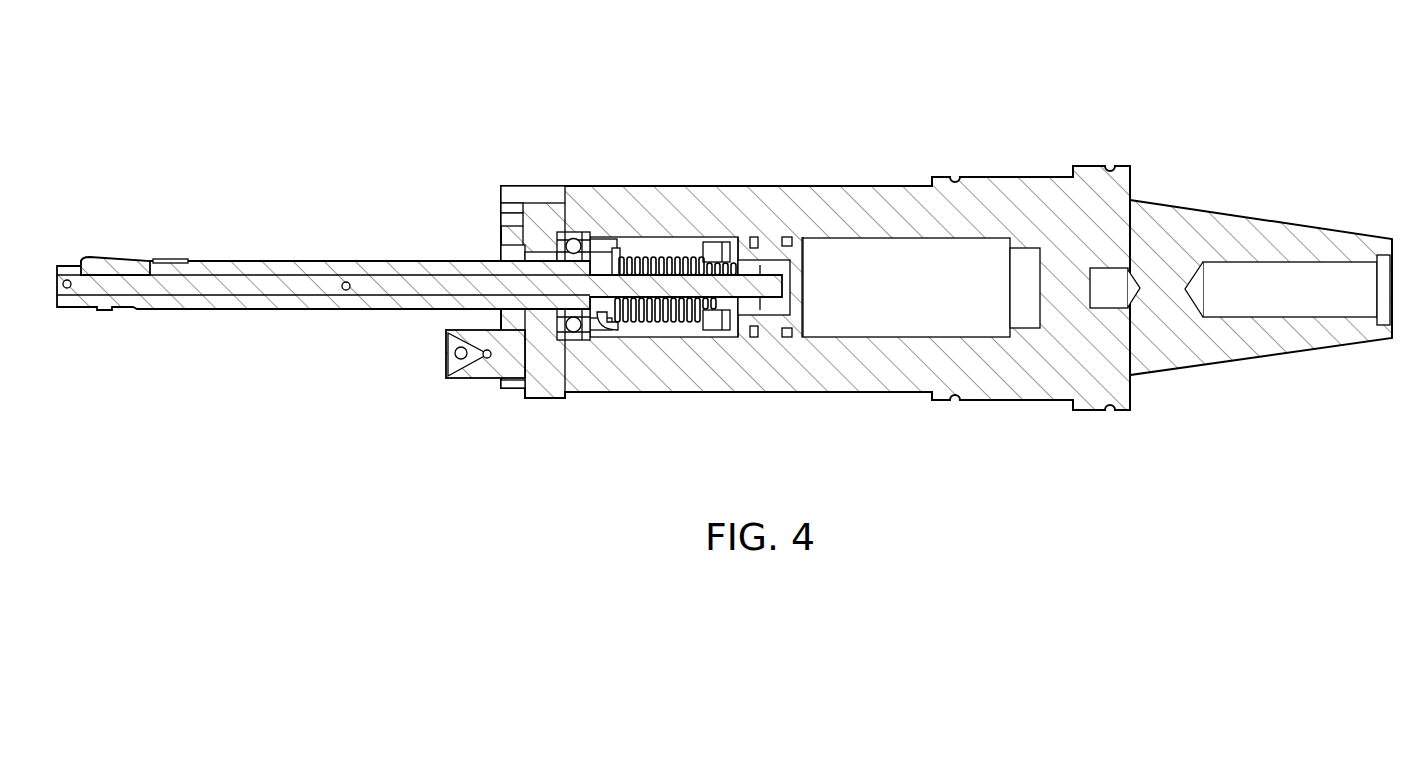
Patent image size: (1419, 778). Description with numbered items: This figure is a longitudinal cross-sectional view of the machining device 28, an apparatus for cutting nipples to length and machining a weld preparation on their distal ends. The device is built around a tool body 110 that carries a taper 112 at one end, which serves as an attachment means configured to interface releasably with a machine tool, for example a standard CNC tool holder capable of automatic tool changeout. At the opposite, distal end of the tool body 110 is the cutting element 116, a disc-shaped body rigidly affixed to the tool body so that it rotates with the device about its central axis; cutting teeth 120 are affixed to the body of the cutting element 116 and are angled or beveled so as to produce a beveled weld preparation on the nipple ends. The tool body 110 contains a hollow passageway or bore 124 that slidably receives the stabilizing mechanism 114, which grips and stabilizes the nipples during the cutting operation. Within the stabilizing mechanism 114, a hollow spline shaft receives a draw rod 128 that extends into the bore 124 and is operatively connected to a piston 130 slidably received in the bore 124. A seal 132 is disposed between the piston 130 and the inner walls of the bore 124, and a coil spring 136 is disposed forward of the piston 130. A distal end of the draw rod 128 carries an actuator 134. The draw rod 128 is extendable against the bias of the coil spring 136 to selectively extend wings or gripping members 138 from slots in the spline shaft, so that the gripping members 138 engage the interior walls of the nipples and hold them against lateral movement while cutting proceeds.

The tool holder assembly 28 is at (717, 264).
The tool body 110 is at (860, 192).
The taper 112 is at (1248, 230).
The stabilizing mechanism 114 is at (412, 271).
The cutting element 116 is at (507, 410).
The cutting teeth 120 is at (453, 362).
The bore 124 is at (938, 258).
The draw rod 128 is at (345, 292).
The piston 130 is at (797, 316).
The seal 132 is at (787, 342).
The actuator 134 is at (65, 295).
The coil spring 136 is at (648, 342).
The gripping members 138 is at (127, 262).